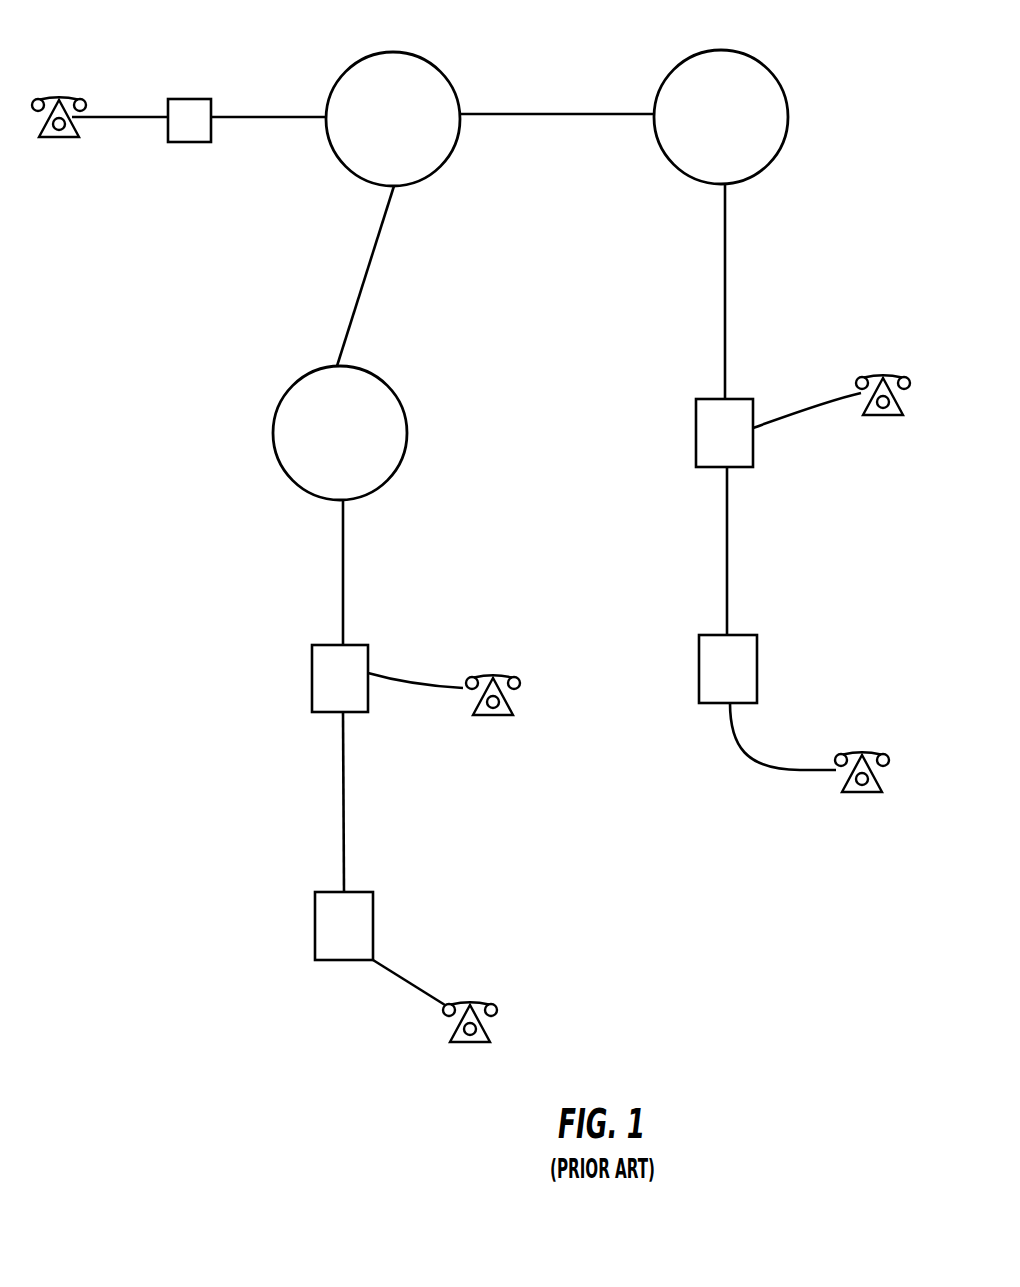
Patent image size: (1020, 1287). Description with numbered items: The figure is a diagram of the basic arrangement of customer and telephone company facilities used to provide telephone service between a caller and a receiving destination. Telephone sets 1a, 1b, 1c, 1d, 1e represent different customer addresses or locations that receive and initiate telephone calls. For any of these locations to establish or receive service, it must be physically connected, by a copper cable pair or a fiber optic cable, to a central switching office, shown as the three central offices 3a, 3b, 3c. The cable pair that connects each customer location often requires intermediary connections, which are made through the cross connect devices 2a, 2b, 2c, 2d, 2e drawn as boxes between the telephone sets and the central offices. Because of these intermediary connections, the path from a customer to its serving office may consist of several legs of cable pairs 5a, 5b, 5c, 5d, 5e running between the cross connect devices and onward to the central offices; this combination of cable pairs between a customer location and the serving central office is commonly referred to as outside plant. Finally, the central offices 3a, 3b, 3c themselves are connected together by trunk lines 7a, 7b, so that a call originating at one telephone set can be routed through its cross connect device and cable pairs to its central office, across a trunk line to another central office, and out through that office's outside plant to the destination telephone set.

The telephone set 1a is at (483, 1022).
The telephone set 1b is at (509, 695).
The telephone set 1c is at (59, 99).
The telephone set 1d is at (895, 395).
The telephone set 1e is at (876, 772).
The cross connect device 2a is at (373, 918).
The cross connect device 2b is at (312, 683).
The cross connect device 2c is at (195, 102).
The cross connect device 2d is at (696, 425).
The cross connect device 2e is at (699, 662).
The central office 3a is at (405, 427).
The central office 3b is at (425, 57).
The central office 3c is at (738, 52).
The cable pair 5a is at (343, 813).
The cable pair 5b is at (343, 567).
The cable pair 5c is at (290, 118).
The cable pair 5d is at (726, 283).
The cable pair 5e is at (727, 535).
The trunk line 7a is at (377, 255).
The trunk line 7b is at (540, 115).